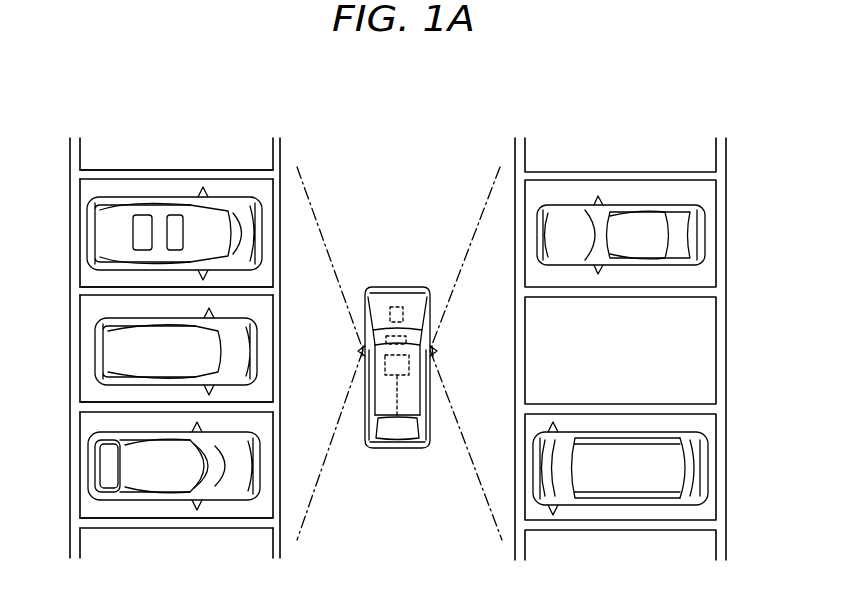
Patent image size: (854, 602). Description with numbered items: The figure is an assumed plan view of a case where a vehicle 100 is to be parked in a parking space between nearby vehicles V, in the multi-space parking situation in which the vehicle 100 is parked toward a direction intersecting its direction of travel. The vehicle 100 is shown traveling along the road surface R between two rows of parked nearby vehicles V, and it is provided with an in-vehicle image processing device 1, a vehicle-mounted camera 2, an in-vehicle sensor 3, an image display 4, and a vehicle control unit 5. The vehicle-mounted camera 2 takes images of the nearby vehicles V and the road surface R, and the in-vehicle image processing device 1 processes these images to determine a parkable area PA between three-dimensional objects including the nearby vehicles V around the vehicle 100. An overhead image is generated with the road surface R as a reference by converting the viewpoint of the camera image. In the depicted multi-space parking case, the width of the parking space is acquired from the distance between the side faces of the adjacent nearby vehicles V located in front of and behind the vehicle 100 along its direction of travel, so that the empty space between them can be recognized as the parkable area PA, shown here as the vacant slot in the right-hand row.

The in-vehicle image processing device 1 is at (397, 415).
The vehicle-mounted camera 2 is at (360, 349).
The in-vehicle sensor 3 is at (385, 372).
The image display 4 is at (386, 338).
The vehicle control unit 5 is at (392, 308).
The vehicle 100 is at (390, 253).
The road surface R is at (395, 153).
The nearby vehicles V is at (88, 231).
The parkable area PA is at (700, 348).